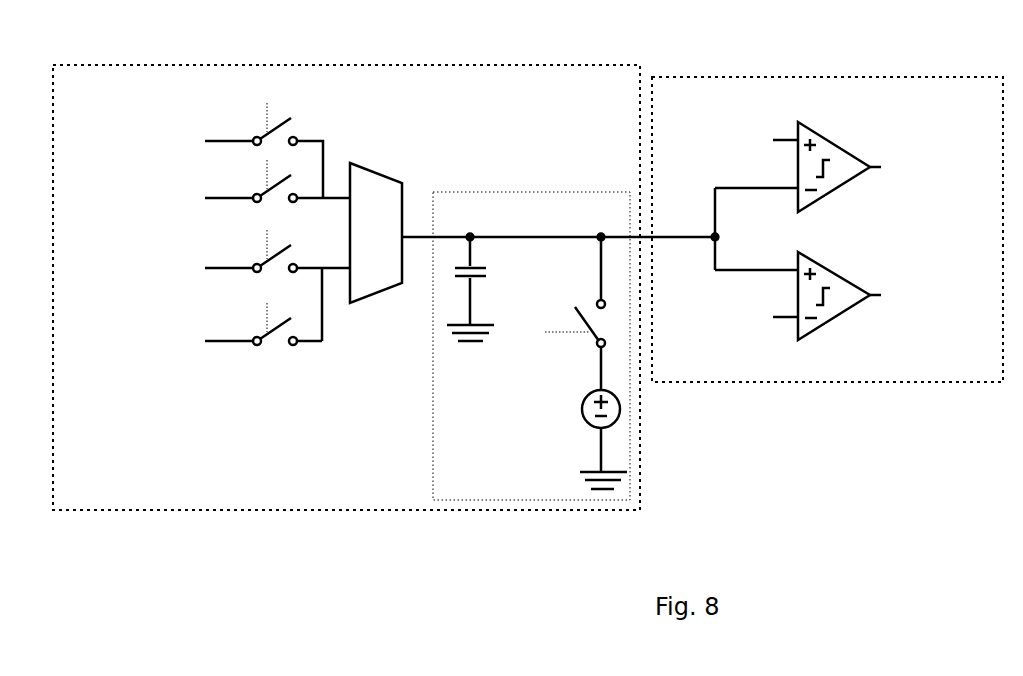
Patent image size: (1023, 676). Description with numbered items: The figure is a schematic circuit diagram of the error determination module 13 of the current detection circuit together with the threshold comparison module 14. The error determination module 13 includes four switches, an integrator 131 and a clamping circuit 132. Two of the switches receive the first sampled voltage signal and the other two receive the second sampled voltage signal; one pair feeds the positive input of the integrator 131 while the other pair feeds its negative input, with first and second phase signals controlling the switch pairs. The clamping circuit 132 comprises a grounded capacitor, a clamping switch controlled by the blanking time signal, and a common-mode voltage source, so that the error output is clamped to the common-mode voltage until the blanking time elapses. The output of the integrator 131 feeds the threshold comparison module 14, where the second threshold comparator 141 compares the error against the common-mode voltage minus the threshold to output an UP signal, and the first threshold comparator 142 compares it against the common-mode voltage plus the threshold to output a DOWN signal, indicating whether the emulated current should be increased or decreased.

The error determination module 13 is at (450, 72).
The integrator 131 is at (378, 173).
The clamping circuit 132 is at (430, 388).
The threshold comparison module 14 is at (843, 87).
The second threshold comparator 141 is at (848, 150).
The first threshold comparator 142 is at (840, 287).